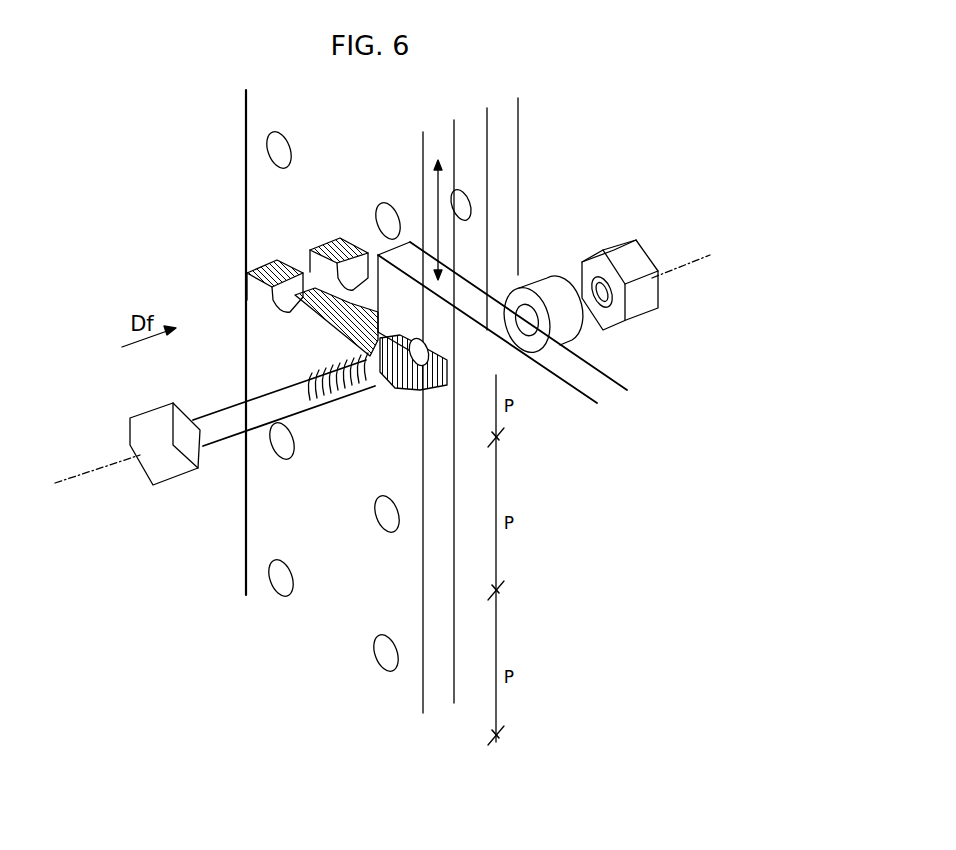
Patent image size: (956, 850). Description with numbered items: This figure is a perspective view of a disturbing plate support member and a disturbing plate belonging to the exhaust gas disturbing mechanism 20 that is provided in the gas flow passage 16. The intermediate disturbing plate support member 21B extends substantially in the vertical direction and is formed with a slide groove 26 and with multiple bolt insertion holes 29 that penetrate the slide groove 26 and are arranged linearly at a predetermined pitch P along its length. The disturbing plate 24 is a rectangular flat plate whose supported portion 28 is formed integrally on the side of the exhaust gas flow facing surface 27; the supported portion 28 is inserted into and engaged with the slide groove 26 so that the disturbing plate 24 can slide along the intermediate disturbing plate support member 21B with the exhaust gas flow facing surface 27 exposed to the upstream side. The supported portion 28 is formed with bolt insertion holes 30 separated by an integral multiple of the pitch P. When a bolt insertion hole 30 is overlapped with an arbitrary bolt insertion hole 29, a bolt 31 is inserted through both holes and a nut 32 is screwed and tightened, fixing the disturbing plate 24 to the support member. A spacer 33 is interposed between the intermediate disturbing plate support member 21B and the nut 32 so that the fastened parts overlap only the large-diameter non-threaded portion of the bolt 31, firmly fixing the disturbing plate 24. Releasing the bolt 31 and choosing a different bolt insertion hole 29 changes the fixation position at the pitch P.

The gas flow passage 16 is at (147, 209).
The exhaust gas disturbing mechanism 20 is at (558, 195).
The intermediate disturbing plate support member 21B is at (244, 544).
The disturbing plate 24 is at (600, 385).
The slide groove 26 is at (302, 258).
The exhaust gas flow facing surface 27 is at (596, 368).
The supported portion 28 is at (405, 250).
The bolt insertion hole 29 is at (268, 153).
The bolt insertion hole 30 is at (495, 277).
The bolt 31 is at (140, 435).
The nut 32 is at (637, 247).
The spacer 33 is at (540, 270).